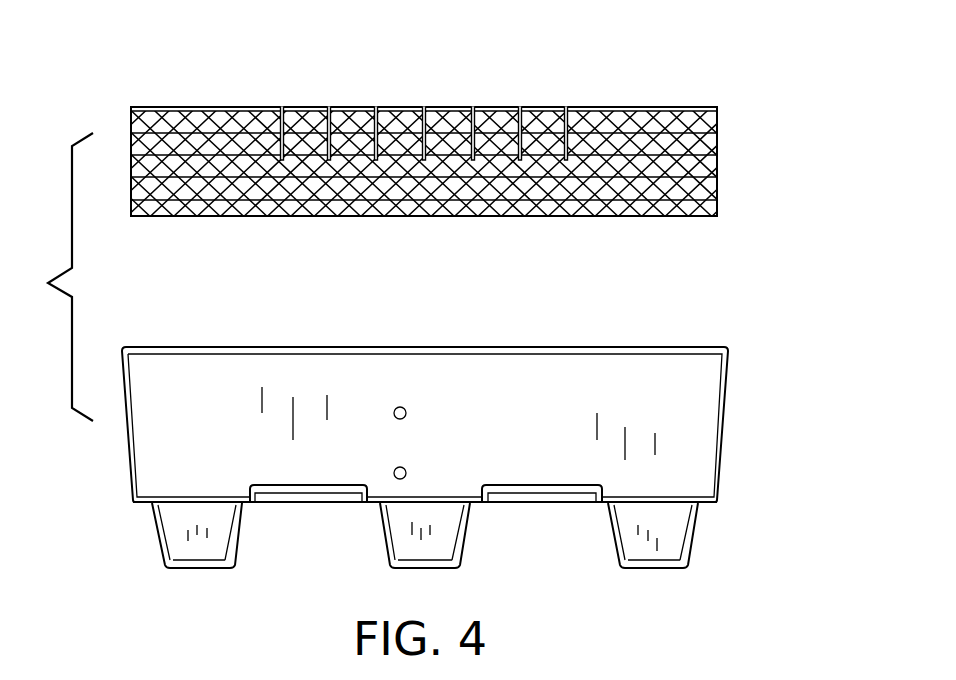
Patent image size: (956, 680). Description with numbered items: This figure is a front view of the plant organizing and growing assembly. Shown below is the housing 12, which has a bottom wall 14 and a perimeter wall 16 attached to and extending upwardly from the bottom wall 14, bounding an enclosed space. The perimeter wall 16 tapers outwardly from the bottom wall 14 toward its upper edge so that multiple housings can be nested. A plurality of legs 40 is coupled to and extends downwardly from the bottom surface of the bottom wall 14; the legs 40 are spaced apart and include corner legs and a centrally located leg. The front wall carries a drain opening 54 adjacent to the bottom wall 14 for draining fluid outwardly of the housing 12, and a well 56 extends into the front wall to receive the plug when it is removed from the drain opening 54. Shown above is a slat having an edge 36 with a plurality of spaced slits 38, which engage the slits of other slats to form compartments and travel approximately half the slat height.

The housing 12 is at (138, 503).
The bottom wall 14 is at (256, 518).
The perimeter wall 16 is at (112, 462).
The edge 36 is at (185, 107).
The slits 38 is at (282, 107).
The legs 40 is at (482, 562).
The drain opening 54 is at (406, 468).
The well 56 is at (400, 406).